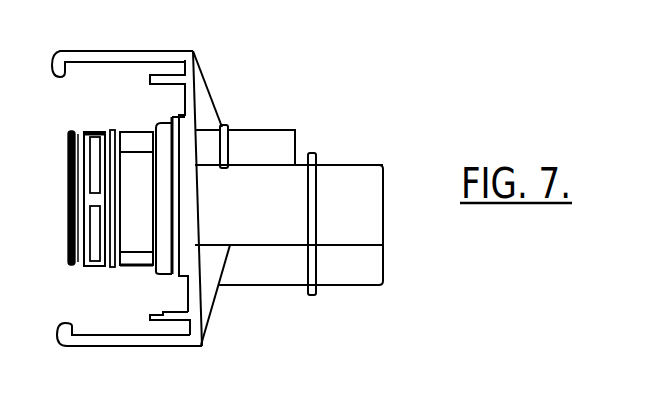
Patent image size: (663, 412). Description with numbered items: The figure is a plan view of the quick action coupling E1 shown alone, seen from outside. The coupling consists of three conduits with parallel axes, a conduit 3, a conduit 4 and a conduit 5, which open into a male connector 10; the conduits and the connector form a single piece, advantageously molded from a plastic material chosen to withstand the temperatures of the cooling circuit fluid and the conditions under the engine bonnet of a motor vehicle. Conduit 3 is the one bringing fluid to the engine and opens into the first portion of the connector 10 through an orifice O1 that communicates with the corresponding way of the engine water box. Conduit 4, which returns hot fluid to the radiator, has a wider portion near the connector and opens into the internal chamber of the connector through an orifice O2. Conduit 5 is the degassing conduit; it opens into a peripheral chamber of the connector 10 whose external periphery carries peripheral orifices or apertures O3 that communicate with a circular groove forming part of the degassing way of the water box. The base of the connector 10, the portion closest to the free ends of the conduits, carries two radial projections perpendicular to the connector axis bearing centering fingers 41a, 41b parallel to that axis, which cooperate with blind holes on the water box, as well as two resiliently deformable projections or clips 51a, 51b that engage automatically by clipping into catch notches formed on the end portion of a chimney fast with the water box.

The quick action coupling E1 is at (332, 97).
The centering finger 41a is at (63, 55).
The centering finger 41b is at (72, 348).
The clip 51a is at (148, 80).
The clip 51b is at (150, 313).
The male connector 10 is at (163, 133).
The orifice O1 is at (172, 277).
The orifice O2 is at (68, 203).
The peripheral orifices O3 is at (96, 262).
The conduit 5 is at (270, 130).
The conduit 4 is at (367, 192).
The conduit 3 is at (372, 273).